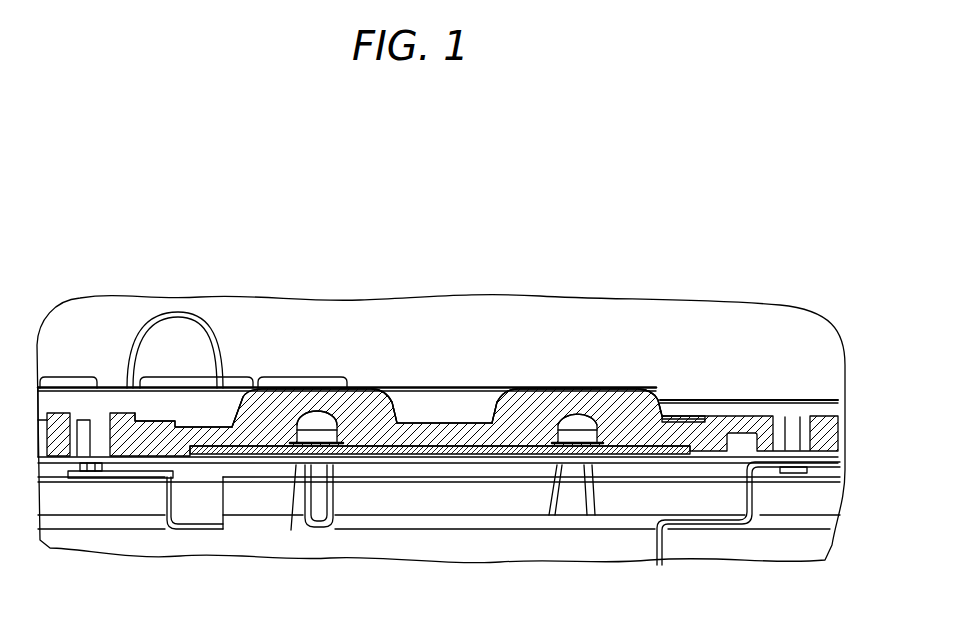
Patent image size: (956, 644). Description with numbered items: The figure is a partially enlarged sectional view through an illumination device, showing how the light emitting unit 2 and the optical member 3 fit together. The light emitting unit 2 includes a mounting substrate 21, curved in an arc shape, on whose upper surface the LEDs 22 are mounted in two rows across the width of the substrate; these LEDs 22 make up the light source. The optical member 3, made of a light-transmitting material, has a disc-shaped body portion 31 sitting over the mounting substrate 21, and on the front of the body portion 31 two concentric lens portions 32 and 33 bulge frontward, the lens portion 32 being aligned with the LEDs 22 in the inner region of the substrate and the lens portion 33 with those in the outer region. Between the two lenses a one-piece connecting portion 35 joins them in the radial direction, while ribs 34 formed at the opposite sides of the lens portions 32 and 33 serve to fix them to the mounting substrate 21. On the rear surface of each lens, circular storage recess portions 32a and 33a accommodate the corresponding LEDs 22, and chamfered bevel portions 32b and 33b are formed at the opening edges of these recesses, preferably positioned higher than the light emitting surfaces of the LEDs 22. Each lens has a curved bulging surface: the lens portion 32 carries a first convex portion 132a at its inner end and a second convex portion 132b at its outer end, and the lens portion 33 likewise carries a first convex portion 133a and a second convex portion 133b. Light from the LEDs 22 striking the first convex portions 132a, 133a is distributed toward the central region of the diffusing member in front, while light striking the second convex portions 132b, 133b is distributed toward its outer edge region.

The light emitting unit 2 is at (677, 450).
The optical member 3 is at (757, 427).
The mounting substrate 21 is at (582, 456).
The LED 22 is at (305, 444).
The body portion 31 is at (728, 422).
The lens portion 32 is at (357, 400).
The storage recess portion 32a is at (318, 422).
The bevel portion 32b is at (294, 454).
The lens portion 33 is at (523, 413).
The storage recess portion 33a is at (572, 418).
The bevel portion 33b is at (557, 463).
The rib 34 is at (203, 432).
The connecting portion 35 is at (437, 433).
The first convex portion 132a is at (234, 424).
The second convex portion 132b is at (397, 421).
The first convex portion 133a is at (497, 407).
The second convex portion 133b is at (650, 393).